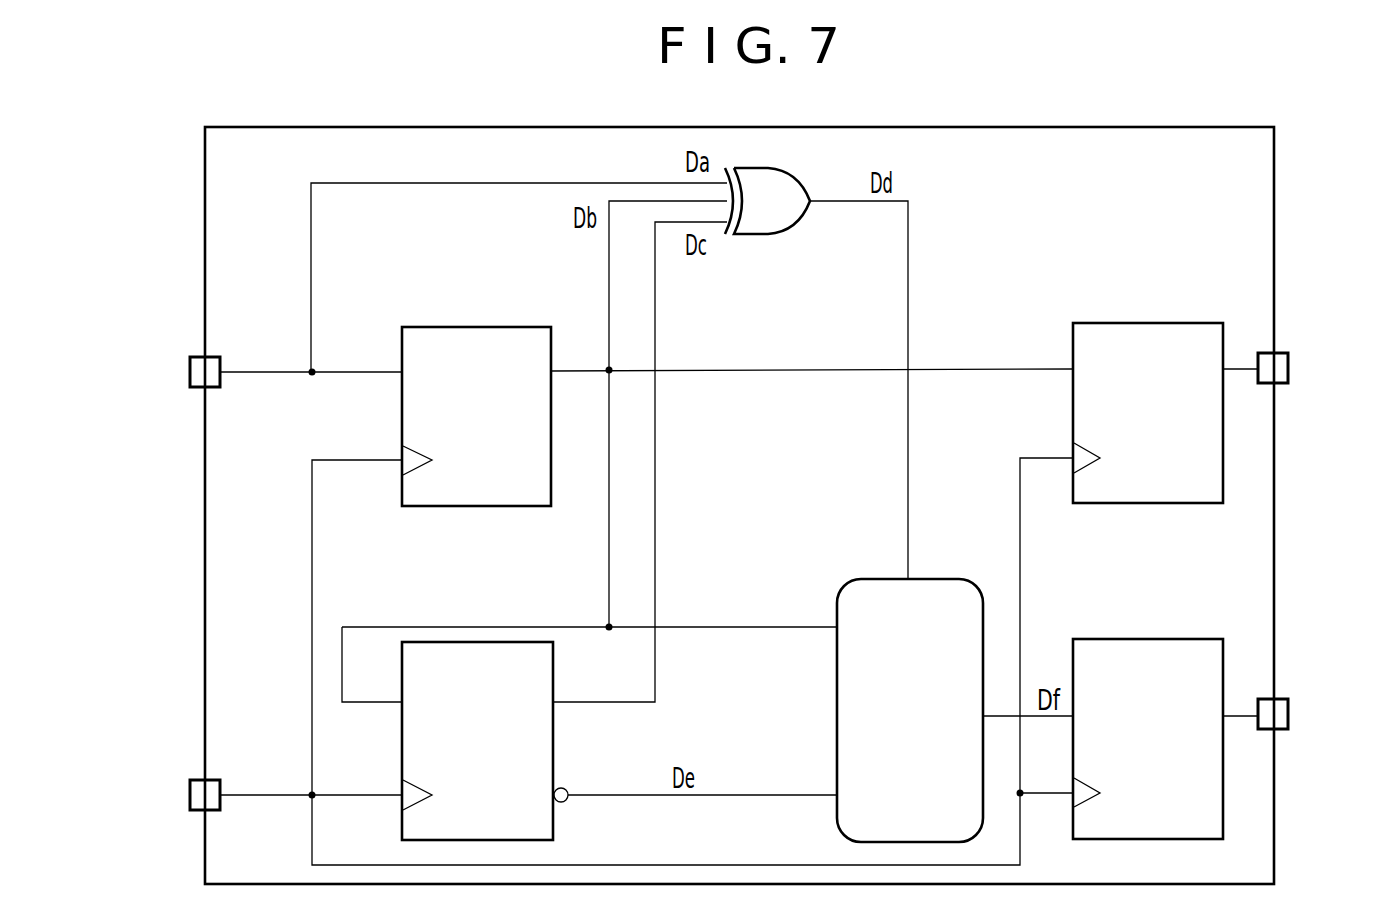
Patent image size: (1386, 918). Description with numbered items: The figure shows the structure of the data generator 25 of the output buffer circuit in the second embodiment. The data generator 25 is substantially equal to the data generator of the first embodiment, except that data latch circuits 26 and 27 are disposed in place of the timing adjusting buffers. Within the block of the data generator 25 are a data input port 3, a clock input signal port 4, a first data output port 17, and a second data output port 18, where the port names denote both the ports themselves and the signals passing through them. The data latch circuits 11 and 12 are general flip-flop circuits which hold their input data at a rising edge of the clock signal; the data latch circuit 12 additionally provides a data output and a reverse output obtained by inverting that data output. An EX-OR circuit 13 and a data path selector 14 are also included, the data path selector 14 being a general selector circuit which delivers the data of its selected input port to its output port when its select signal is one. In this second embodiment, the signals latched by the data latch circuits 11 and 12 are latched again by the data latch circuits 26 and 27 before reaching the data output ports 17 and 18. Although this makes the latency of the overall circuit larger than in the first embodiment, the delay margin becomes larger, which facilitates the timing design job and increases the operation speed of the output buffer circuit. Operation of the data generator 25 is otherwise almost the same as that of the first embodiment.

The data generator 25 is at (452, 127).
The data input port DIN 3 is at (192, 357).
The clock input signal port CLOCK 4 is at (194, 780).
The data output port DOUTA 17 is at (1288, 353).
The data output port DOUTB 18 is at (1288, 699).
The data latch circuit 11 is at (445, 327).
The data latch circuit 12 is at (553, 828).
The EX-OR circuit 13 is at (760, 234).
The data path selector 14 is at (920, 579).
The data latch circuit 26 is at (1117, 323).
The data latch circuit 27 is at (1115, 639).